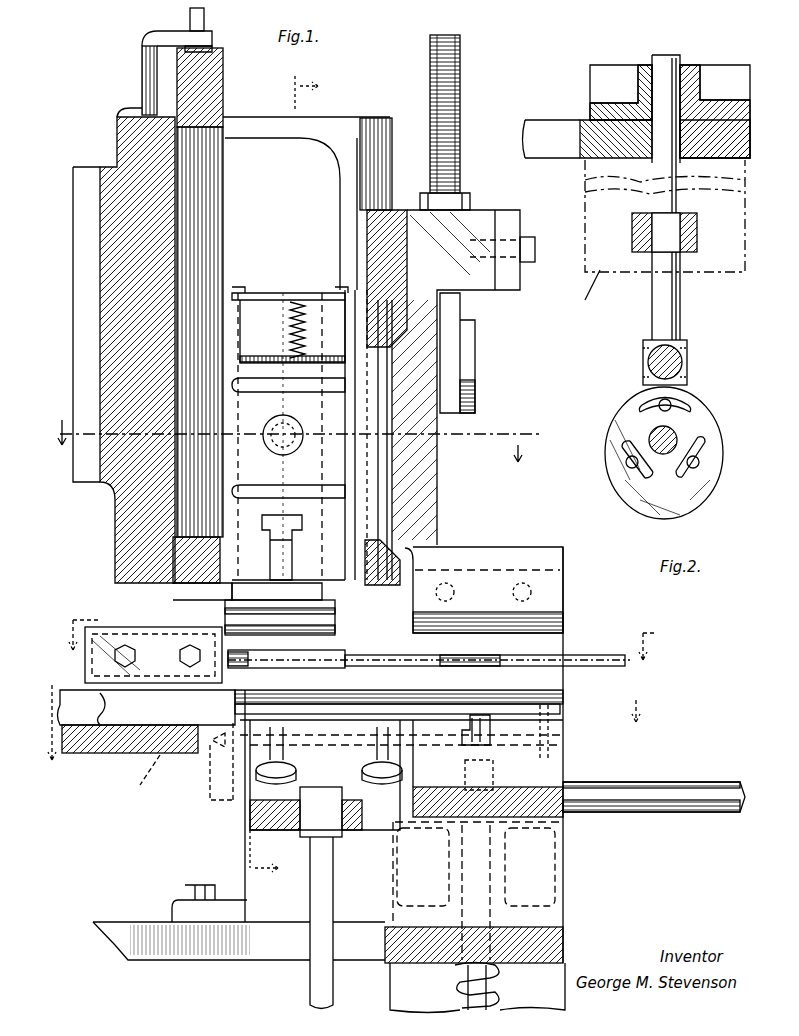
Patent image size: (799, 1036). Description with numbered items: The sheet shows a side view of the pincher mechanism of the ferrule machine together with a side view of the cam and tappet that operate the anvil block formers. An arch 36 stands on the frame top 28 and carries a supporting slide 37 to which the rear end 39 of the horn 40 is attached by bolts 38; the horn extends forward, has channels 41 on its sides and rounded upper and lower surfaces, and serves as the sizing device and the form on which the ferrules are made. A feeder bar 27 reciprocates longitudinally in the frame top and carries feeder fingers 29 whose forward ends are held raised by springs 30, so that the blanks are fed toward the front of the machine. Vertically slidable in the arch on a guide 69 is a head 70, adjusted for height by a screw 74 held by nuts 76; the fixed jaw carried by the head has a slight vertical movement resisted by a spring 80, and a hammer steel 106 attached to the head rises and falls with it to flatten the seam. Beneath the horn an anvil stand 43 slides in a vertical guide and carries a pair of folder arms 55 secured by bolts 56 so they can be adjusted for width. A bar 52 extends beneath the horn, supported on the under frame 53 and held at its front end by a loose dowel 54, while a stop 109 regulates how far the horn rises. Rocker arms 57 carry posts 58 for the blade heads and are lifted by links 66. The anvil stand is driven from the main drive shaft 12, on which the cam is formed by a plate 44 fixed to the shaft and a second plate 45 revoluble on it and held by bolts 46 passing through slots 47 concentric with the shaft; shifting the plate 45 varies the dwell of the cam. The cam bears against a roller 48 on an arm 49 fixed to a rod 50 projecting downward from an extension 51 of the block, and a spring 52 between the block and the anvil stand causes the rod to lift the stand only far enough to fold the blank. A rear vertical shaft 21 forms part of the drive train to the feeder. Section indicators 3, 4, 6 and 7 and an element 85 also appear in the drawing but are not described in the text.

In FIG. 1, the stop 109 is at (140, 92).
In FIG. 1, the supporting slide 37 is at (205, 222).
In FIG. 1, the arch 36 is at (115, 531).
In FIG. 1, the screw 74 is at (460, 78).
In FIG. 1, the nuts 76 is at (466, 196).
In FIG. 1, the rear vertical shaft 21 is at (475, 335).
In FIG. 1, the section line 7 is at (291, 478).
In FIG. 1, the section line 6 is at (297, 433).
In FIG. 1, the section line 3 is at (363, 647).
In FIG. 1, the section line 4 is at (348, 724).
In FIG. 1, the spring 80 is at (304, 330).
In FIG. 1, the head 70 is at (286, 461).
In FIG. 1, the guide 69 is at (200, 600).
In FIG. 1, the channels 41 is at (335, 660).
In FIG. 1, the horn 40 is at (395, 656).
In FIG. 1, the hammer steel 106 is at (560, 625).
In FIG. 1, the bolts 38 is at (135, 660).
In FIG. 1, the rear end 39 is at (97, 709).
In FIG. 1, the feeder bar 27 is at (135, 730).
In FIG. 1, the frame top 28 is at (88, 755).
In FIG. 1, the feeder fingers 29 is at (137, 785).
In FIG. 1, the posts 58 is at (180, 775).
In FIG. 1, the springs 30 is at (262, 770).
In FIG. 1, the folder arms 55 is at (300, 725).
In FIG. 1, the bolts 56 is at (462, 740).
In FIG. 1, the spring 52 is at (560, 704).
In FIG. 1, the loose dowel 54 is at (565, 728).
In FIG. 1, the anvil stand 43 is at (530, 755).
In FIG. 2, the anvil stand 43 is at (580, 298).
In FIG. 1, the under frame 53 is at (555, 790).
In FIG. 1, the rocker arms 57 is at (358, 835).
In FIG. 1, the links 66 is at (310, 900).
In FIG. 1, the shaft 85 is at (706, 785).
In FIG. 2, the extension 51 is at (697, 252).
In FIG. 2, the rod 50 is at (680, 325).
In FIG. 2, the arm 49 is at (687, 350).
In FIG. 2, the roller 48 is at (687, 368).
In FIG. 2, the transverse shaft 12 is at (675, 435).
In FIG. 2, the slots 47 is at (700, 446).
In FIG. 2, the bolts 46 is at (705, 460).
In FIG. 2, the second plate 45 is at (712, 508).
In FIG. 2, the plate 44 is at (638, 508).